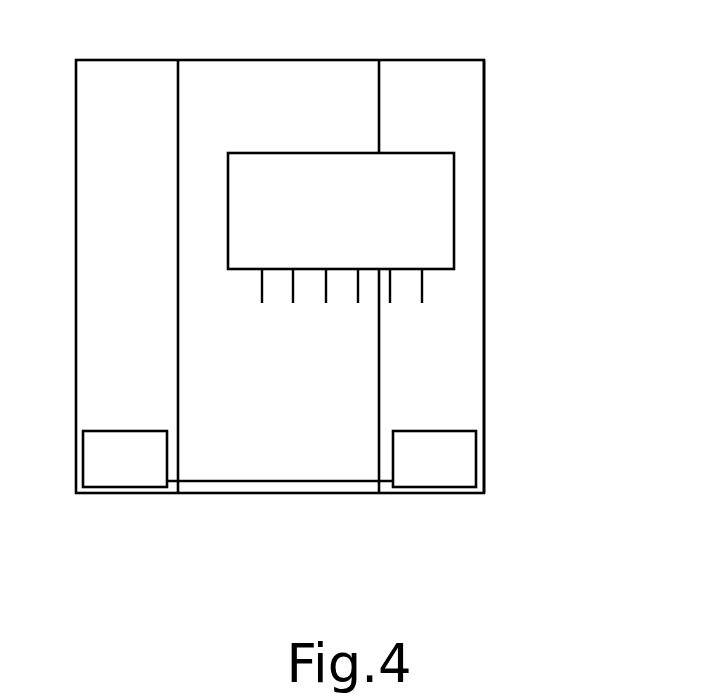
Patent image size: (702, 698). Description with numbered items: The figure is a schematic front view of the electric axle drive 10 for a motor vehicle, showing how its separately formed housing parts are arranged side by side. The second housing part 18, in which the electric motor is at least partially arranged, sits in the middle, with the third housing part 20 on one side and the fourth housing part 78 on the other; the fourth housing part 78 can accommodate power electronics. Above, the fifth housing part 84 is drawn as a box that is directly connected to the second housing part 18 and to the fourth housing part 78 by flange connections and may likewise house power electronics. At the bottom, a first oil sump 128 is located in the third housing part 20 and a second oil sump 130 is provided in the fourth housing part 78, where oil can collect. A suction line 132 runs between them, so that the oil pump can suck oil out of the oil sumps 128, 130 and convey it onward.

The electric axle drive 10 is at (490, 57).
The second housing part 18 is at (289, 60).
The third housing part 20 is at (133, 60).
The fourth housing part 78 is at (485, 152).
The fifth housing part 84 is at (410, 153).
The first oil sump 128 is at (127, 487).
The second oil sump 130 is at (437, 487).
The suction line 132 is at (293, 481).